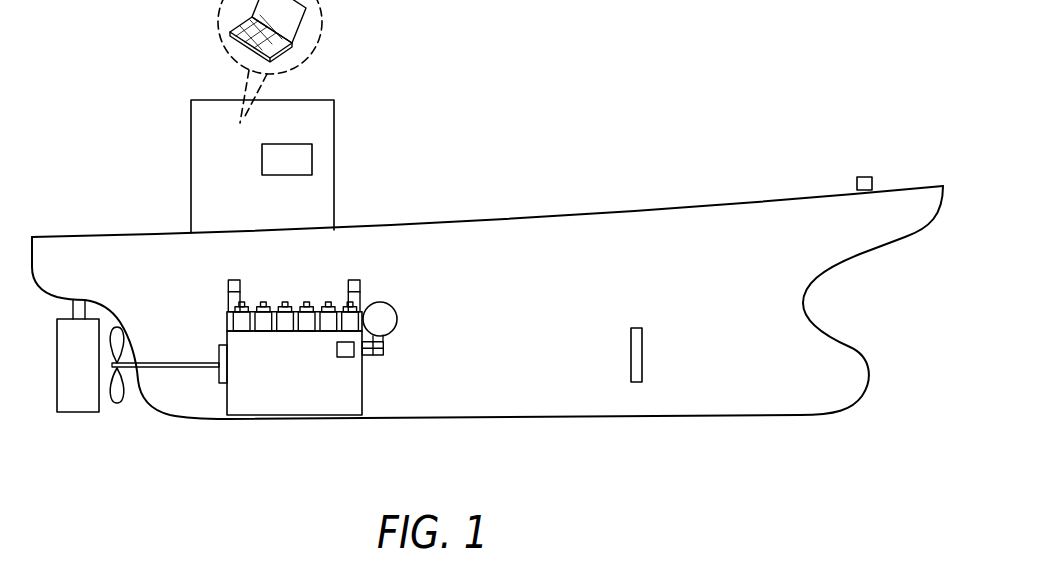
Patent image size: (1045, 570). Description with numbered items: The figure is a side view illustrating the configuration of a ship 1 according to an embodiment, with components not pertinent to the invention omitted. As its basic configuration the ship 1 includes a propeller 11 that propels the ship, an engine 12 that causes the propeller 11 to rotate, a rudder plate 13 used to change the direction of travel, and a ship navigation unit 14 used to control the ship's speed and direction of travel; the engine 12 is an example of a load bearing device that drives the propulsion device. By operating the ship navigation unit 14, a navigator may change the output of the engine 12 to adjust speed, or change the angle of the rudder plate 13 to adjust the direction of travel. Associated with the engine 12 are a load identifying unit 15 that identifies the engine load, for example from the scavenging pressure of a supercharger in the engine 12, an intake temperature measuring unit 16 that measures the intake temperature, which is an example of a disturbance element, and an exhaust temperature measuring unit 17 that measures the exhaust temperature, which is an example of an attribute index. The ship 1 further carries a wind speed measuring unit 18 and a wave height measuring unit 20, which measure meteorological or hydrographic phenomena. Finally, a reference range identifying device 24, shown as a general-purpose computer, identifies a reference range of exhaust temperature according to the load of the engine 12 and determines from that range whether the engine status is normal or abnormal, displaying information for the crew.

The ship 1 is at (688, 69).
The propeller 11 is at (117, 403).
The engine 12 is at (352, 402).
The rudder plate 13 is at (77, 412).
The ship navigation unit 14 is at (312, 153).
The load identifying unit 15 is at (346, 357).
The intake temperature measuring unit 16 is at (228, 280).
The exhaust temperature measuring unit 17 is at (360, 278).
The wind speed measuring unit 18 is at (865, 177).
The wave height measuring unit 20 is at (636, 382).
The reference range identifying device 24 is at (303, 37).